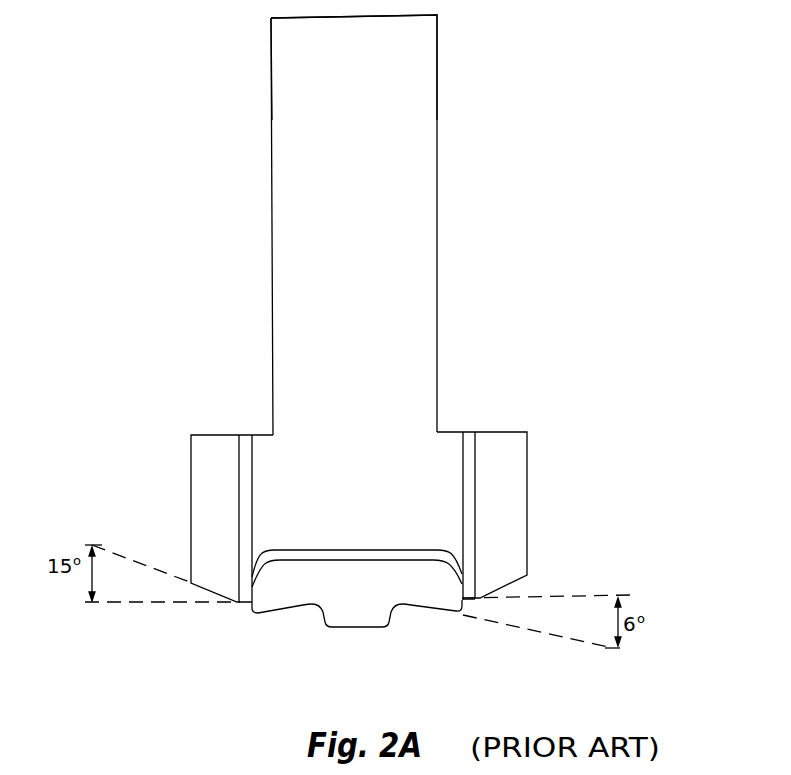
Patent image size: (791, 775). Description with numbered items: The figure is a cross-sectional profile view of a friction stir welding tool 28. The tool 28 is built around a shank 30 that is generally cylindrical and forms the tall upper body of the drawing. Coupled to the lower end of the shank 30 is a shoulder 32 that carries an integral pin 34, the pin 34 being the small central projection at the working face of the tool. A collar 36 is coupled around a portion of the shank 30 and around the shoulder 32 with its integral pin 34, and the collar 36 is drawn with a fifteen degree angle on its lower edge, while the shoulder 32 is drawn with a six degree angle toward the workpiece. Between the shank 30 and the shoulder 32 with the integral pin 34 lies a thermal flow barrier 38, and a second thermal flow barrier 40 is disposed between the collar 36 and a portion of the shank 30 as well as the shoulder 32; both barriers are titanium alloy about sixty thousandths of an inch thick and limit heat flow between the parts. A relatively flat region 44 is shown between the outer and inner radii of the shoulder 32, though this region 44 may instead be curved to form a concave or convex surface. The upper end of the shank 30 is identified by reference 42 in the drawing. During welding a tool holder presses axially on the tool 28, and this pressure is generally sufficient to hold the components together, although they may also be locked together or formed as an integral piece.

The friction stir welding tool 28 is at (543, 262).
The shank 30 is at (412, 363).
The shoulder 32 is at (317, 625).
The integral pin 34 is at (397, 638).
The collar 36 is at (508, 488).
The thermal flow barrier 38 is at (333, 557).
The thermal flow barrier 40 is at (243, 522).
The shank 42 is at (437, 78).
The relatively flat region 44 is at (297, 605).